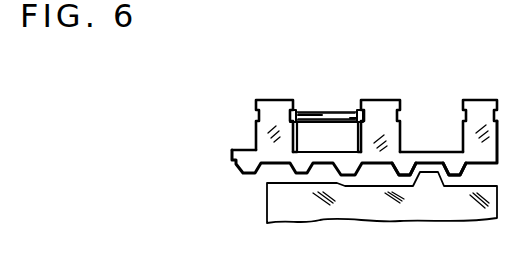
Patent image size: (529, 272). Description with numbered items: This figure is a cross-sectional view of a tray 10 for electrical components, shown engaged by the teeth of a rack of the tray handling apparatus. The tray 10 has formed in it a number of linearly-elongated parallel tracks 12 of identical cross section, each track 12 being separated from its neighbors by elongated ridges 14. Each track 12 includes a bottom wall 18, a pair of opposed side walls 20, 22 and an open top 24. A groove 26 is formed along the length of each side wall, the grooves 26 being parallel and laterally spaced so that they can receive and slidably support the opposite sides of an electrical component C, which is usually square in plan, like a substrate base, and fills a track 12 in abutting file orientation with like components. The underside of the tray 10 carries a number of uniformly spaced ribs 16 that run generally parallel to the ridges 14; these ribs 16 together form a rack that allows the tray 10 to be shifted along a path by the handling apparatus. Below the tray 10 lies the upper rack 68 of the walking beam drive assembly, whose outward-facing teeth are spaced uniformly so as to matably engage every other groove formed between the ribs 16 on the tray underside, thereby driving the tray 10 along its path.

The tray 10 is at (239, 118).
The track 12 is at (430, 152).
The ridge 14 is at (380, 100).
The rib 16 is at (366, 167).
The bottom wall 18 is at (333, 152).
The side wall 20 is at (312, 103).
The side wall 22 is at (363, 106).
The open top 24 is at (322, 98).
The groove 26 is at (460, 117).
The upper rack 68 is at (407, 212).
The electrical component C is at (338, 110).